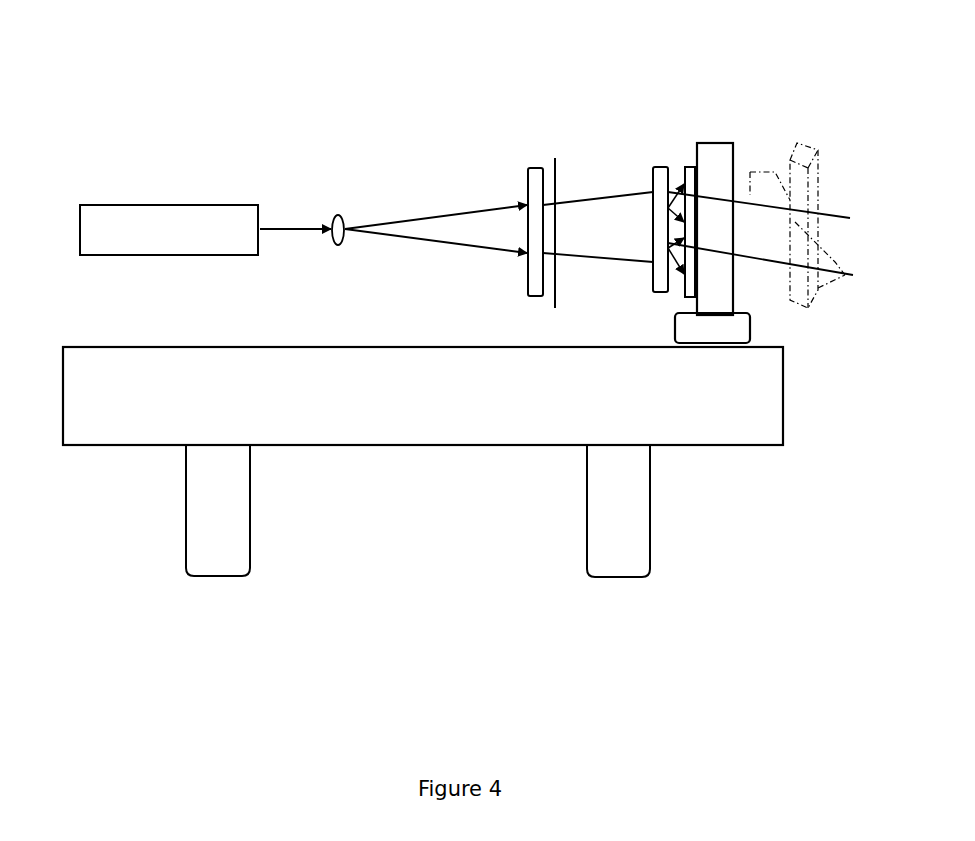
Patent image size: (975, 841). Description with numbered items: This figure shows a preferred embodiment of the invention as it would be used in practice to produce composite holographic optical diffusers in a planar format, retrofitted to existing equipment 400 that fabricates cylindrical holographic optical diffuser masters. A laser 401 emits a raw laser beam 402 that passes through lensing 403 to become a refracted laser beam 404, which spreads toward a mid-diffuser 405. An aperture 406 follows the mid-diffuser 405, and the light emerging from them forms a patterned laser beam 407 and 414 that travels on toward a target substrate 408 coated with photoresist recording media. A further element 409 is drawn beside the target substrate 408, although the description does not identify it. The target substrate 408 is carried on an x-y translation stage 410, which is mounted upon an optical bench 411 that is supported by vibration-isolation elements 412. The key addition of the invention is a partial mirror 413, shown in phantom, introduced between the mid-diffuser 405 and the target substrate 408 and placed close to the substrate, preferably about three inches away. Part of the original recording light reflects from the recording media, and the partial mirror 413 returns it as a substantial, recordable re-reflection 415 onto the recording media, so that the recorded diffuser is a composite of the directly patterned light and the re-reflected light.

The existing equipment 400 is at (62, 85).
The laser 401 is at (195, 205).
The raw laser beam 402 is at (287, 229).
The lensing 403 is at (326, 210).
The refracted laser beam 404 is at (475, 212).
The mid-diffuser 405 is at (527, 168).
The aperture 406 is at (555, 158).
The patterned laser beam 407 is at (640, 193).
The target substrate 408 is at (688, 167).
The detector block 409 is at (720, 143).
The x-y translation stage 410 is at (750, 323).
The optical bench 411 is at (410, 446).
The vibration-isolation elements 412 is at (587, 487).
The partial mirror 413 is at (655, 167).
The patterned laser beam 414 is at (785, 217).
The re-reflection 415 is at (786, 270).